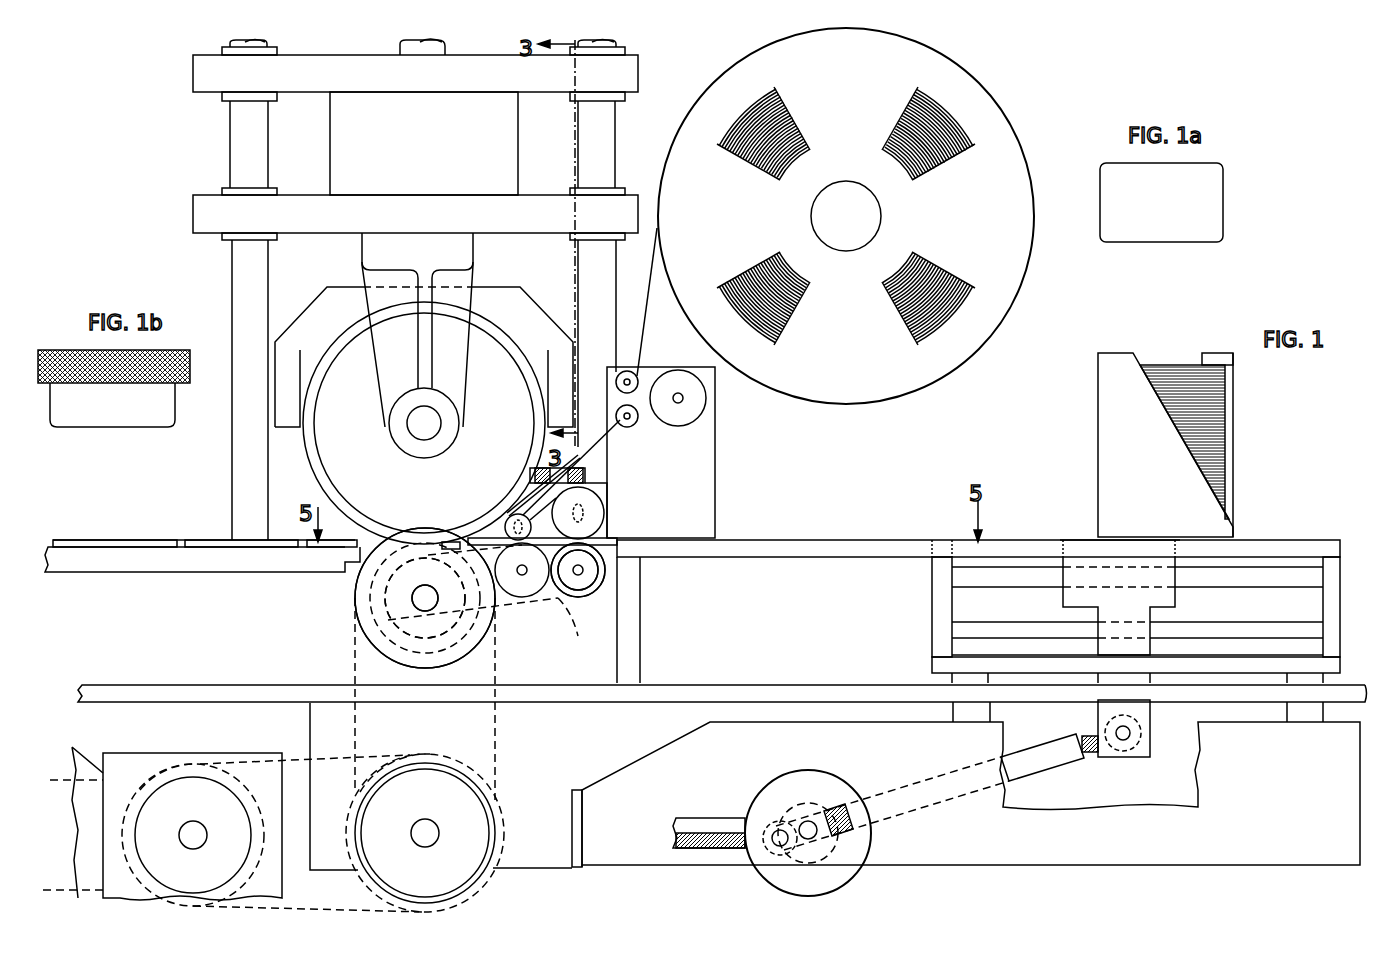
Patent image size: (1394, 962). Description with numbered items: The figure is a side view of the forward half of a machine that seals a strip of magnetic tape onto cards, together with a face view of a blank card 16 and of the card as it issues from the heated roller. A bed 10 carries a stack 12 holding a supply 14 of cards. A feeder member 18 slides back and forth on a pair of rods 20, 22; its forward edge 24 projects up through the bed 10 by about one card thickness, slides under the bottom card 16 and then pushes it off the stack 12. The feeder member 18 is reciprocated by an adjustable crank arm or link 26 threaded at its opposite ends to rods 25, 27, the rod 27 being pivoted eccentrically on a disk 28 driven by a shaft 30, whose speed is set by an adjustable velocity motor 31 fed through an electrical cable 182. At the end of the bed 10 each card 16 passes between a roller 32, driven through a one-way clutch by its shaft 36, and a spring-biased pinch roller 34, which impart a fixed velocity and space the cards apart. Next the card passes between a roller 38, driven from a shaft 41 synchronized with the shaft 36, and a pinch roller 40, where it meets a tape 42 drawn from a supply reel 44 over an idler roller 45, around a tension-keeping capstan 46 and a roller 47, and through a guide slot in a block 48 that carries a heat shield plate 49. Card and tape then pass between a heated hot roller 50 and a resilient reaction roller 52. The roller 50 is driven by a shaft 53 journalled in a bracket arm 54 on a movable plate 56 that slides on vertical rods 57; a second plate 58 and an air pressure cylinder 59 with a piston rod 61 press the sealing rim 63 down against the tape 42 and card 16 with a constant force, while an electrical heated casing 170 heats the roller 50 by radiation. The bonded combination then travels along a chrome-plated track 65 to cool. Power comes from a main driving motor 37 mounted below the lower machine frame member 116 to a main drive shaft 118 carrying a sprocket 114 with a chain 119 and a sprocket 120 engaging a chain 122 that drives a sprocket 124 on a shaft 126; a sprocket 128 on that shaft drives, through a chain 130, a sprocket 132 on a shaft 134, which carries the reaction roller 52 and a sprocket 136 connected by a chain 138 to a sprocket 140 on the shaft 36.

In FIG. 1, the bed 10 is at (1333, 540).
In FIG. 1, the stack 12 is at (1113, 352).
In FIG. 1, the supply of cards 14 is at (1213, 407).
In FIG. 1, the card 16 is at (110, 540).
In FIG. 1A, the card 16 is at (1205, 207).
In FIG. 1B, the card 16 is at (125, 418).
In FIG. 1, the feeder member 18 is at (1068, 597).
In FIG. 1, the rod 20 is at (1248, 575).
In FIG. 1, the rod 22 is at (1248, 626).
In FIG. 1, the forward edge 24 is at (1068, 540).
In FIG. 1, the rod 25 is at (1098, 735).
In FIG. 1, the crank arm or link 26 is at (968, 770).
In FIG. 1, the rod 27 is at (838, 840).
In FIG. 1, the disk 28 is at (822, 805).
In FIG. 1, the shaft 30 is at (805, 822).
In FIG. 1, the adjustable velocity motor 31 is at (764, 790).
In FIG. 1, the roller 32 is at (604, 565).
In FIG. 1, the pinch roller 34 is at (604, 516).
In FIG. 1, the shaft 36 is at (580, 582).
In FIG. 1, the main driving motor 37 is at (85, 755).
In FIG. 1, the roller 38 is at (527, 585).
In FIG. 1, the pinch roller 40 is at (505, 523).
In FIG. 1, the shaft 41 is at (522, 590).
In FIG. 1, the tape 42 is at (619, 316).
In FIG. 1B, the tape 42 is at (187, 378).
In FIG. 1, the supply reel 44 is at (980, 108).
In FIG. 1, the idler roller 45 is at (636, 375).
In FIG. 1, the capstan 46 is at (701, 400).
In FIG. 1, the roller 47 is at (636, 423).
In FIG. 1, the block 48 is at (540, 468).
In FIG. 1, the heat shield plate 49 is at (528, 492).
In FIG. 1, the hot roller 50 is at (360, 447).
In FIG. 1, the reaction roller 52 is at (370, 601).
In FIG. 1, the shaft 53 is at (419, 440).
In FIG. 1, the bracket arm 54 is at (388, 383).
In FIG. 1, the movable plate 56 is at (200, 220).
In FIG. 1, the vertical rods 57 is at (243, 143).
In FIG. 1, the second plate 58 is at (200, 84).
In FIG. 1, the air pressure cylinder 59 is at (345, 152).
In FIG. 1, the piston rod 61 is at (400, 50).
In FIG. 1, the sealing rim 63 is at (311, 466).
In FIG. 1, the track 65 is at (190, 566).
In FIG. 1, the sprocket 114 is at (135, 840).
In FIG. 1, the lower machine frame member 116 is at (745, 690).
In FIG. 1, the main drive shaft 118 is at (192, 840).
In FIG. 1, the chain 119 is at (135, 775).
In FIG. 1, the sprocket 120 is at (240, 765).
In FIG. 1, the chain 122 is at (370, 770).
In FIG. 1, the sprocket 124 is at (505, 820).
In FIG. 1, the shaft 126 is at (425, 840).
In FIG. 1, the sprocket 128 is at (475, 780).
In FIG. 1, the chain 130 is at (497, 722).
In FIG. 1, the sprocket 132 is at (355, 583).
In FIG. 1, the shaft 134 is at (420, 605).
In FIG. 1, the sprocket 136 is at (386, 620).
In FIG. 1, the chain 138 is at (572, 616).
In FIG. 1, the sprocket 140 is at (600, 580).
In FIG. 1, the electrical heated casing 170 is at (331, 344).
In FIG. 1, the electrical cable 182 is at (705, 818).